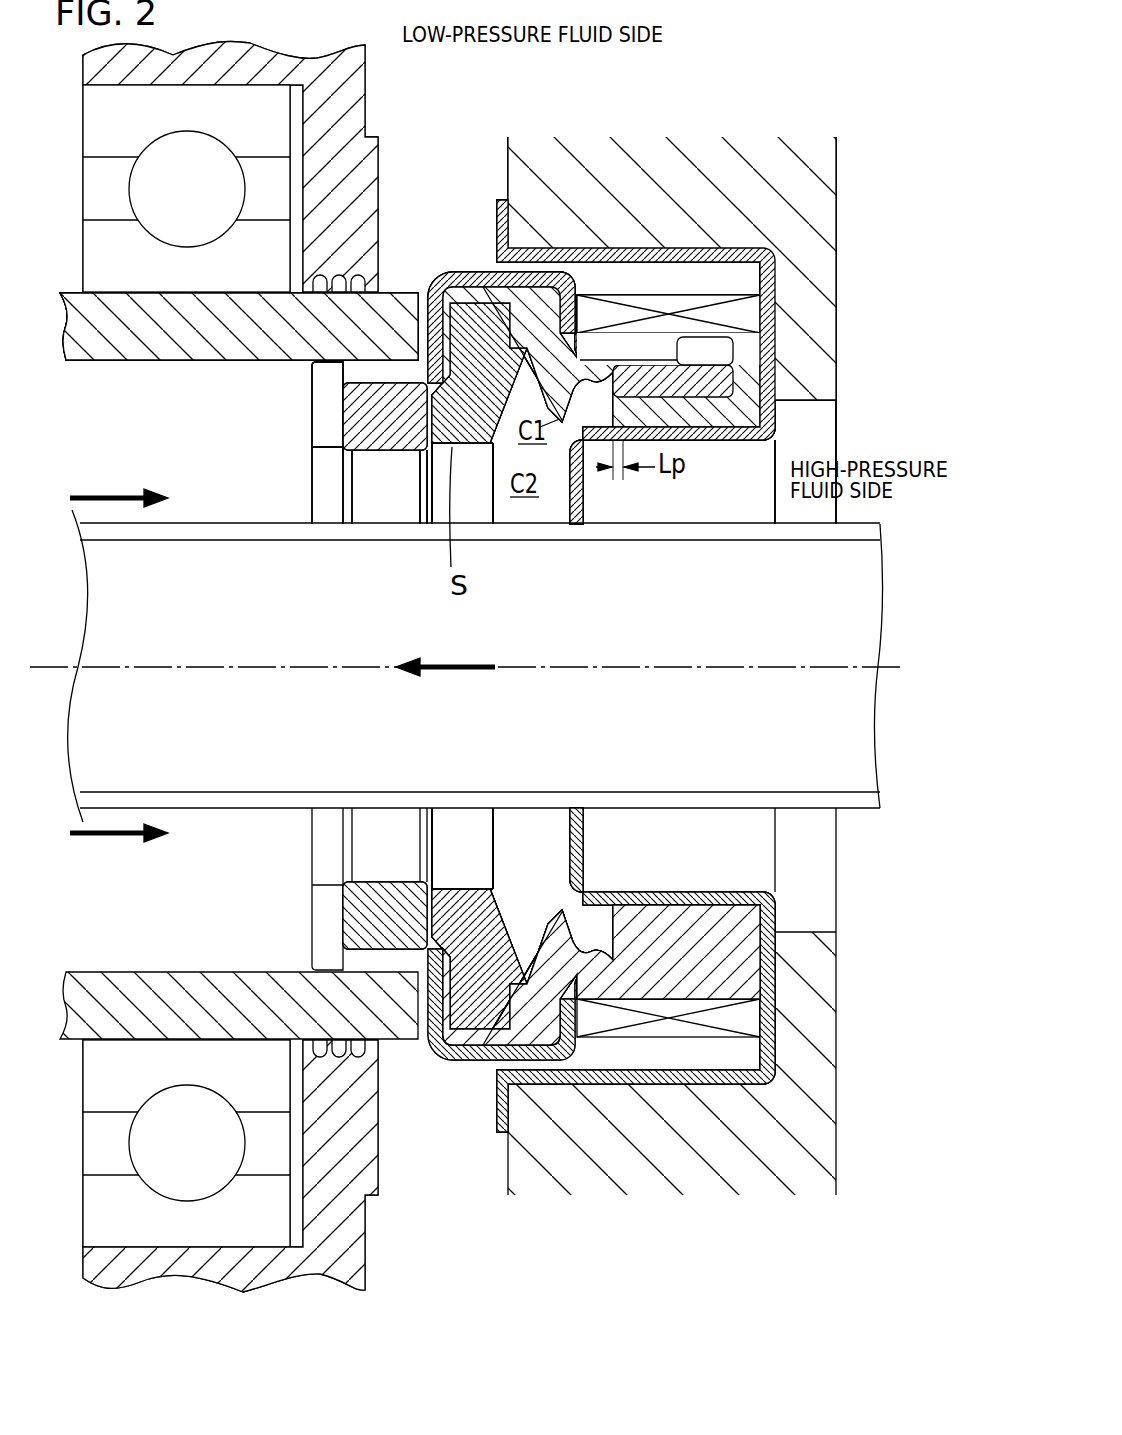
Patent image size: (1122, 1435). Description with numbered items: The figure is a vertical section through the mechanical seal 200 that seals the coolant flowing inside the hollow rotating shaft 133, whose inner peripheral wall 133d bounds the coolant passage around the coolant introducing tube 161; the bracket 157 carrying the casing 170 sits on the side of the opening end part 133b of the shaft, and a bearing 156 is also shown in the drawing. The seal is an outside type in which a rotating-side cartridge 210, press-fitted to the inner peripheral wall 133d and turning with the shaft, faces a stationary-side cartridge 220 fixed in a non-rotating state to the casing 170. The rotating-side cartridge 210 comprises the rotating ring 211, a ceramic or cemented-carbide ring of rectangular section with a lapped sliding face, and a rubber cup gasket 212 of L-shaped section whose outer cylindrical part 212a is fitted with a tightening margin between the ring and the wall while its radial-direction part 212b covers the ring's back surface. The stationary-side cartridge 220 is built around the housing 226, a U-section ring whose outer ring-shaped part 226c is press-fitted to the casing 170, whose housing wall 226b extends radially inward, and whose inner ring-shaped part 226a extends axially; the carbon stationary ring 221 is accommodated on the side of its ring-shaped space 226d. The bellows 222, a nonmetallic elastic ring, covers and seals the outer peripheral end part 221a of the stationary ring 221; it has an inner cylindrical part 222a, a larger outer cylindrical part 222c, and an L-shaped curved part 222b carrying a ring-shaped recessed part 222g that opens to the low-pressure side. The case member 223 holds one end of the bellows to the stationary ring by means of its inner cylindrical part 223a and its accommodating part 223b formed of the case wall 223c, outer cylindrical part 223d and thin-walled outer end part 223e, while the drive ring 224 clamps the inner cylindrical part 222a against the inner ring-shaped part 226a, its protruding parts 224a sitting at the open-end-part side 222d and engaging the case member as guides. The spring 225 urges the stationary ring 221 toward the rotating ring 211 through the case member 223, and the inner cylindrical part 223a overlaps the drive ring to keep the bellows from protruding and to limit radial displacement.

The mechanical seal 200 is at (812, 105).
The stationary-side cartridge 220 is at (747, 98).
The stationary ring 221 is at (448, 300).
The outer peripheral end part 221a is at (425, 975).
The bellows 222 is at (540, 300).
The inner cylindrical part 222a is at (677, 925).
The curved part 222b is at (557, 923).
The outer cylindrical part 222c is at (465, 1040).
The open-end-part side 222d is at (745, 955).
The ring-shaped recessed part 222g is at (597, 1000).
The case member 223 is at (560, 395).
The inner cylindrical part 223a is at (700, 1000).
The accommodating part 223b is at (648, 1290).
The case wall 223c is at (590, 1010).
The outer cylindrical part 223d is at (515, 1000).
The outer end part 223e is at (440, 1010).
The drive ring 224 is at (690, 375).
The protruding parts 224a is at (714, 352).
The spring 225 is at (690, 300).
The housing 226 is at (500, 220).
The inner ring-shaped part 226a is at (705, 892).
The housing wall 226b is at (772, 1020).
The outer ring-shaped part 226c is at (720, 1093).
The ring-shaped space 226d is at (762, 270).
The casing 170 is at (817, 222).
The coolant introducing tube 161 is at (870, 812).
The bearing 156 is at (111, 1212).
The bracket 157 is at (155, 1272).
The hollow rotating shaft 133 is at (73, 295).
The opening end part 133b is at (405, 292).
The inner peripheral wall 133d is at (100, 362).
The rotating-side cartridge 210 is at (200, 408).
The rotating ring 211 is at (392, 450).
The cup gasket 212 is at (345, 390).
The outer cylindrical part 212a is at (331, 961).
The radial-direction part 212b is at (321, 913).